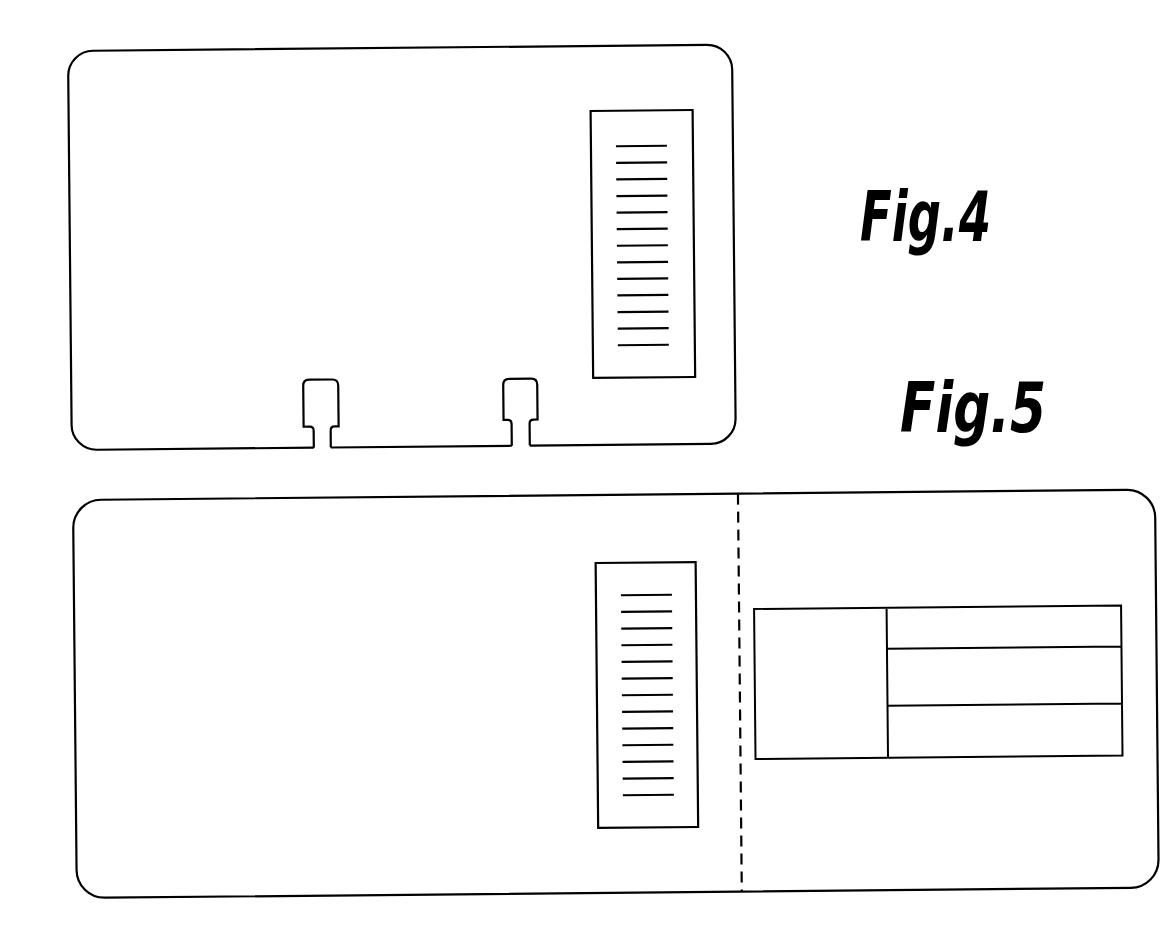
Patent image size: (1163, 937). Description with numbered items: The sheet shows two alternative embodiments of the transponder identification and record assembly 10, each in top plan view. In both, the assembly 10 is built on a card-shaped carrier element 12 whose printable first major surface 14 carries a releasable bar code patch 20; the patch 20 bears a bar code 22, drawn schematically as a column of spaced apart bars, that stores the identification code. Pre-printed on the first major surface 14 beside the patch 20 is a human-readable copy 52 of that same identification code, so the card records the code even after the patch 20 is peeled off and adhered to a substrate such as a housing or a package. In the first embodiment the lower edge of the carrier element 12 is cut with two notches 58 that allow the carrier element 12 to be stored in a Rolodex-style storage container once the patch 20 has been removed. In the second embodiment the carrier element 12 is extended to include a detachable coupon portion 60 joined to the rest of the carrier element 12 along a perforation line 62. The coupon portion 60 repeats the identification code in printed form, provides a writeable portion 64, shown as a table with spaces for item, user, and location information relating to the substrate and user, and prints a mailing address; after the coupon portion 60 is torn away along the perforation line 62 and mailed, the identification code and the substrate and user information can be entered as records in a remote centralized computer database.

In FIG. 4, the identification and record assembly 10 is at (767, 131).
In FIG. 5, the identification and record assembly 10 is at (1060, 459).
In FIG. 4, the carrier element 12 is at (518, 51).
In FIG. 5, the carrier element 12 is at (616, 694).
In FIG. 4, the first major surface 14 is at (426, 96).
In FIG. 5, the first major surface 14 is at (423, 545).
In FIG. 4, the bar code patch 20 is at (692, 183).
In FIG. 5, the bar code patch 20 is at (595, 688).
In FIG. 4, the bar code 22 is at (648, 358).
In FIG. 5, the bar code 22 is at (645, 800).
In FIG. 4, the copy of the identification code 52 is at (386, 147).
In FIG. 5, the copy of the identification code 52 is at (428, 600).
In FIG. 4, the notches 58 is at (318, 455).
In FIG. 5, the detachable coupon portion 60 is at (878, 509).
In FIG. 5, the perforation line 62 is at (745, 510).
In FIG. 5, the writeable portion 64 is at (987, 624).